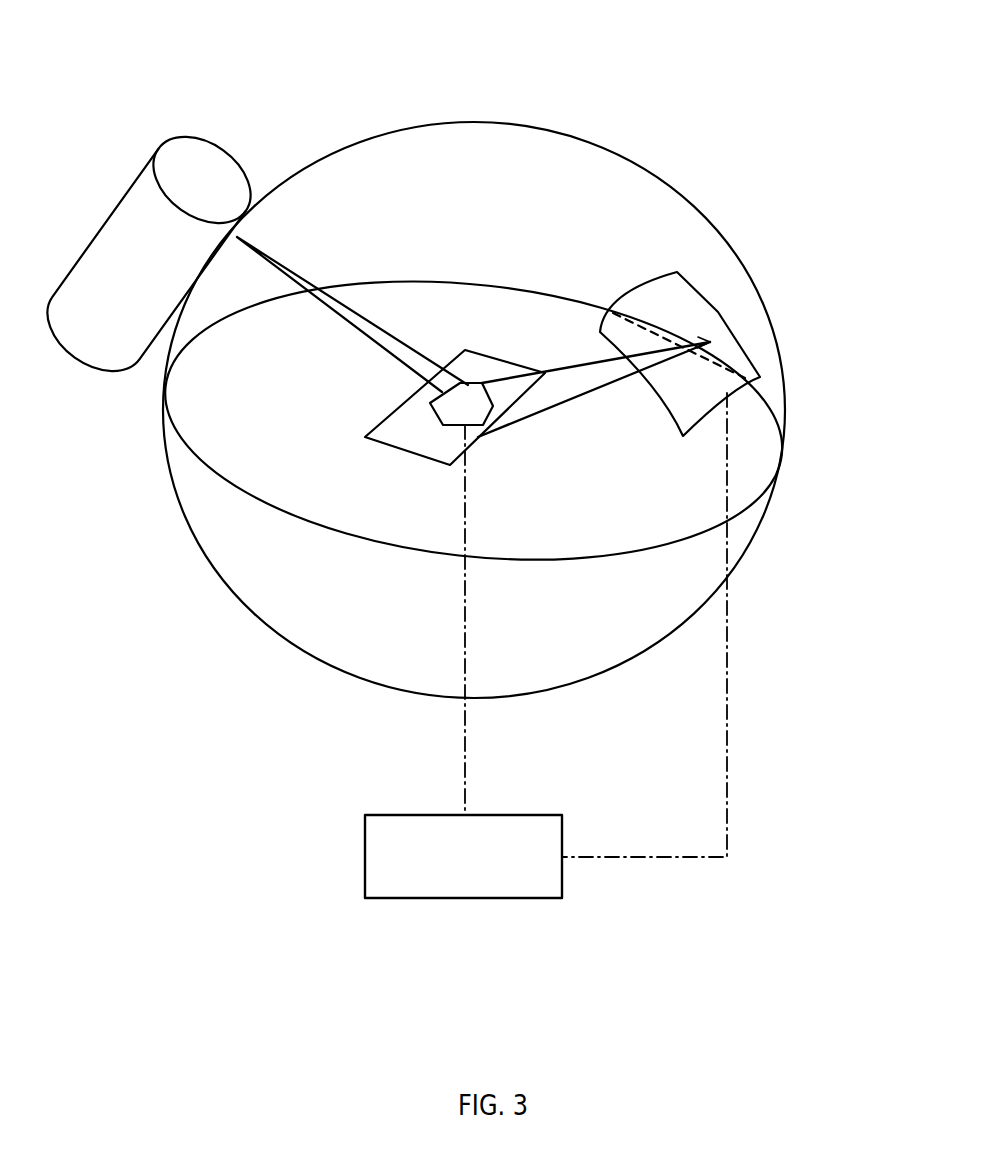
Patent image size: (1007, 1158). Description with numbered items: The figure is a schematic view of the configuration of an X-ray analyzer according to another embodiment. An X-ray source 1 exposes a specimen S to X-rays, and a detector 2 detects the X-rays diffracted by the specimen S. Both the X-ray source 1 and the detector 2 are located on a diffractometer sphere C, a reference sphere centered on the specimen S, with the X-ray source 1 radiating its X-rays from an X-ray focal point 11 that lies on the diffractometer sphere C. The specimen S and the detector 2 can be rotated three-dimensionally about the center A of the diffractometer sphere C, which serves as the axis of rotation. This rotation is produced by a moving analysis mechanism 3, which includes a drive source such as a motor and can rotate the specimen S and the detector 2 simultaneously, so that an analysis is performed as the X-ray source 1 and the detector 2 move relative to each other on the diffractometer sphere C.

The X-ray source 1 is at (222, 157).
The X-ray focal point 11 is at (238, 237).
The detector 2 is at (718, 312).
The moving analysis mechanism 3 is at (447, 898).
The diffractometer sphere C is at (447, 125).
The center of the diffractometer sphere A is at (465, 402).
The specimen S is at (478, 440).